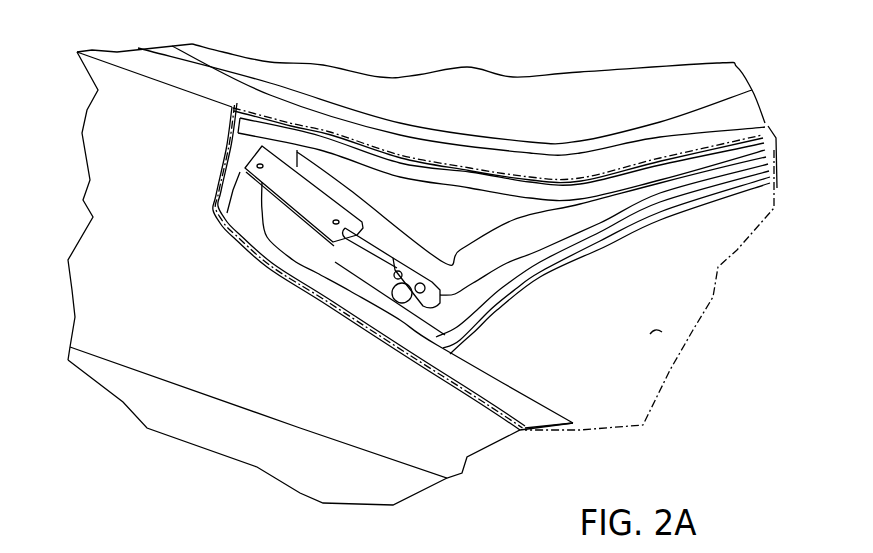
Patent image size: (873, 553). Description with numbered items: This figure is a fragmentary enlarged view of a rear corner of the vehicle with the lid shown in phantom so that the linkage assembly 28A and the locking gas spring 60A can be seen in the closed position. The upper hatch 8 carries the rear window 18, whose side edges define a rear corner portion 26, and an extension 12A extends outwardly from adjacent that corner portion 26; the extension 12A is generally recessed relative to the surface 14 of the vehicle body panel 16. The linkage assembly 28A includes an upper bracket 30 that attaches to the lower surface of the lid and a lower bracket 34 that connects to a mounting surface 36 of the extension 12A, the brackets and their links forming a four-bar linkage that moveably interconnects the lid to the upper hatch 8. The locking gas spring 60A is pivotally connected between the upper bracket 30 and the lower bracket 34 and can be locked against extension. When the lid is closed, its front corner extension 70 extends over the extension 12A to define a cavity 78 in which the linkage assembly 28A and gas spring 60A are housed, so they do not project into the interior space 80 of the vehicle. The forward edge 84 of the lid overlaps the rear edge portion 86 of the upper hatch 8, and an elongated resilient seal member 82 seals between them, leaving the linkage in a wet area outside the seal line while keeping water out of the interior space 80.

The upper hatch 8 is at (685, 78).
The surface 14 is at (133, 197).
The vehicle body panel 16 is at (98, 277).
The rear window 18 is at (547, 90).
The rear corner portions 26 is at (470, 167).
The elongated resilient seal member 82 is at (733, 155).
The forward edge 84 is at (780, 157).
The rear edge portion 86 is at (753, 178).
The extension 12A is at (512, 230).
The front corner portion or extension 70 is at (232, 237).
The upper bracket 30 is at (248, 170).
The linkage assembly 28A is at (277, 243).
The cavity or space 78 is at (300, 277).
The locking gas spring 60A is at (357, 268).
The mounting surface 36 is at (413, 267).
The lower bracket 34 is at (441, 306).
The interior space 80 is at (662, 332).